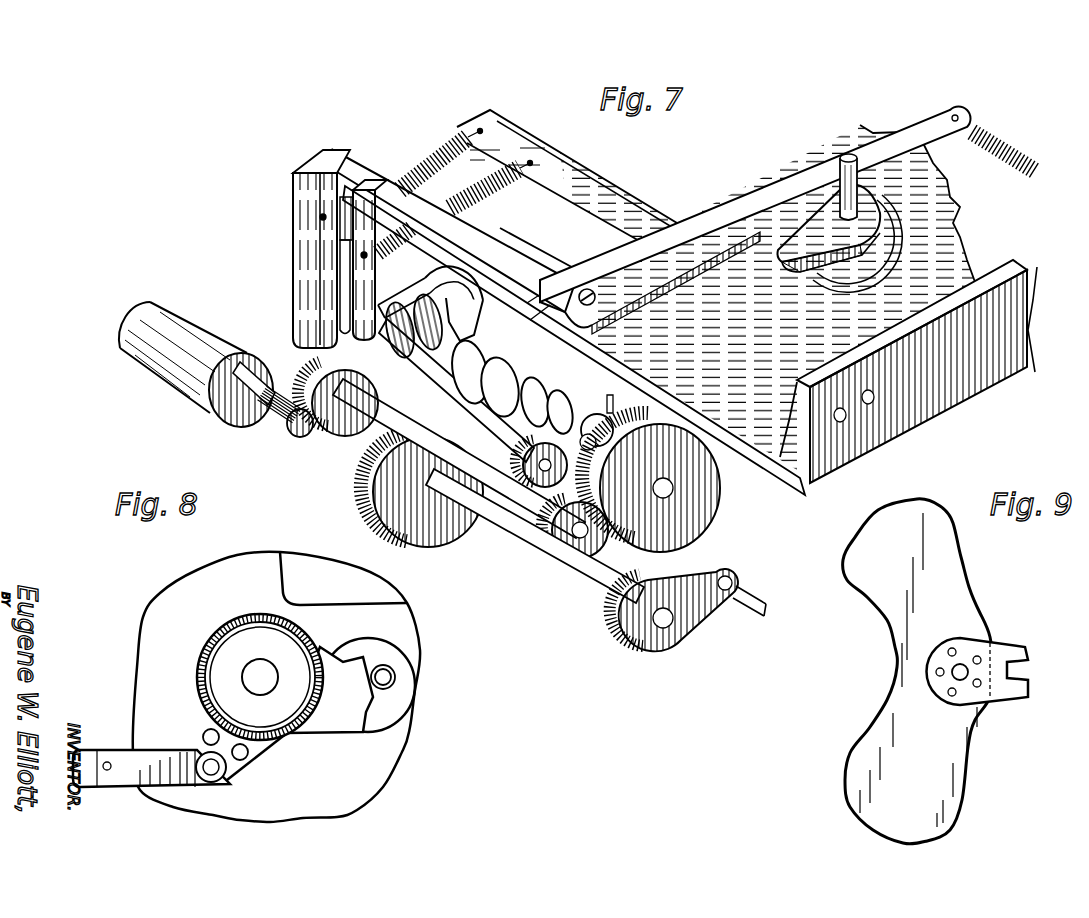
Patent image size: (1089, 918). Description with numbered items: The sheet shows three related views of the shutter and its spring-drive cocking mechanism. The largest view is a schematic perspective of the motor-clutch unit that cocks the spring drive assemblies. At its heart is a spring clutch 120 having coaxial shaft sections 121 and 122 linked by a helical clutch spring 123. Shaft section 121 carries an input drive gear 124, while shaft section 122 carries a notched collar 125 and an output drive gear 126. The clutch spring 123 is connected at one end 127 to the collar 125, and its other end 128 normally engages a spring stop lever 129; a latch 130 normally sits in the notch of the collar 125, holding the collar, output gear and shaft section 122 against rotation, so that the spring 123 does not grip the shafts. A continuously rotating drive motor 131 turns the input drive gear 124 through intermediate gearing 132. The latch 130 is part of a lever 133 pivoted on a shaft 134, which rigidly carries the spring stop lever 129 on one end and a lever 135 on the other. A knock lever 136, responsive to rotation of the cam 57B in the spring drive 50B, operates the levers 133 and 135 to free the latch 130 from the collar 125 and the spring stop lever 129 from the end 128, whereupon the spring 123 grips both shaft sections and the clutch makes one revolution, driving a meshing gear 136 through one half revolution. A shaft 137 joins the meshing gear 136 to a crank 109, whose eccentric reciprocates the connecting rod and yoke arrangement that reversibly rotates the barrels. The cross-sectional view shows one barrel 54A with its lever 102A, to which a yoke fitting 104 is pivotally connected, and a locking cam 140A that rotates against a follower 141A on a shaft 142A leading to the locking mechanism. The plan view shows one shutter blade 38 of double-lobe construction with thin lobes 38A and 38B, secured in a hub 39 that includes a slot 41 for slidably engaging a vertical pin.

In FIG. 7, the knock lever / meshing gear 136 is at (517, 250).
In FIG. 7, the latch 130 is at (500, 267).
In FIG. 7, the lever 135 is at (307, 263).
In FIG. 7, the lever 133 is at (380, 276).
In FIG. 7, the output drive gear 126 is at (427, 295).
In FIG. 7, the end of clutch spring 127 is at (391, 308).
In FIG. 7, the drive motor 131 is at (135, 372).
In FIG. 7, the shaft 134 is at (337, 437).
In FIG. 7, the intermediate gearing 132 is at (459, 458).
In FIG. 7, the notched collar 125 is at (467, 320).
In FIG. 7, the shaft section 122 is at (497, 367).
In FIG. 7, the spring clutch 120 is at (510, 380).
In FIG. 7, the shaft section 121 is at (553, 420).
In FIG. 7, the helical clutch spring 123 is at (525, 410).
In FIG. 7, the spring stop lever 129 is at (613, 385).
In FIG. 7, the end of clutch spring 128 is at (604, 398).
In FIG. 7, the input drive gear 124 is at (720, 507).
In FIG. 7, the shaft 137 is at (527, 543).
In FIG. 7, the crank 109 is at (700, 620).
In FIG. 7, the spring drive 50B is at (948, 213).
In FIG. 7, the cam 57B is at (794, 255).
In FIG. 8, the barrel 54A is at (228, 634).
In FIG. 8, the follower 141A is at (382, 655).
In FIG. 8, the shaft 142A is at (395, 677).
In FIG. 8, the locking cam 140A is at (333, 733).
In FIG. 8, the lever (flange) 102A is at (236, 778).
In FIG. 8, the yoke fitting 104 is at (93, 750).
In FIG. 9, the shutter blade 38 is at (905, 670).
In FIG. 9, the thin lobe 38A is at (880, 531).
In FIG. 9, the thin lobe 38B is at (865, 775).
In FIG. 9, the hub 39 is at (1000, 650).
In FIG. 9, the slot 41 is at (1030, 668).